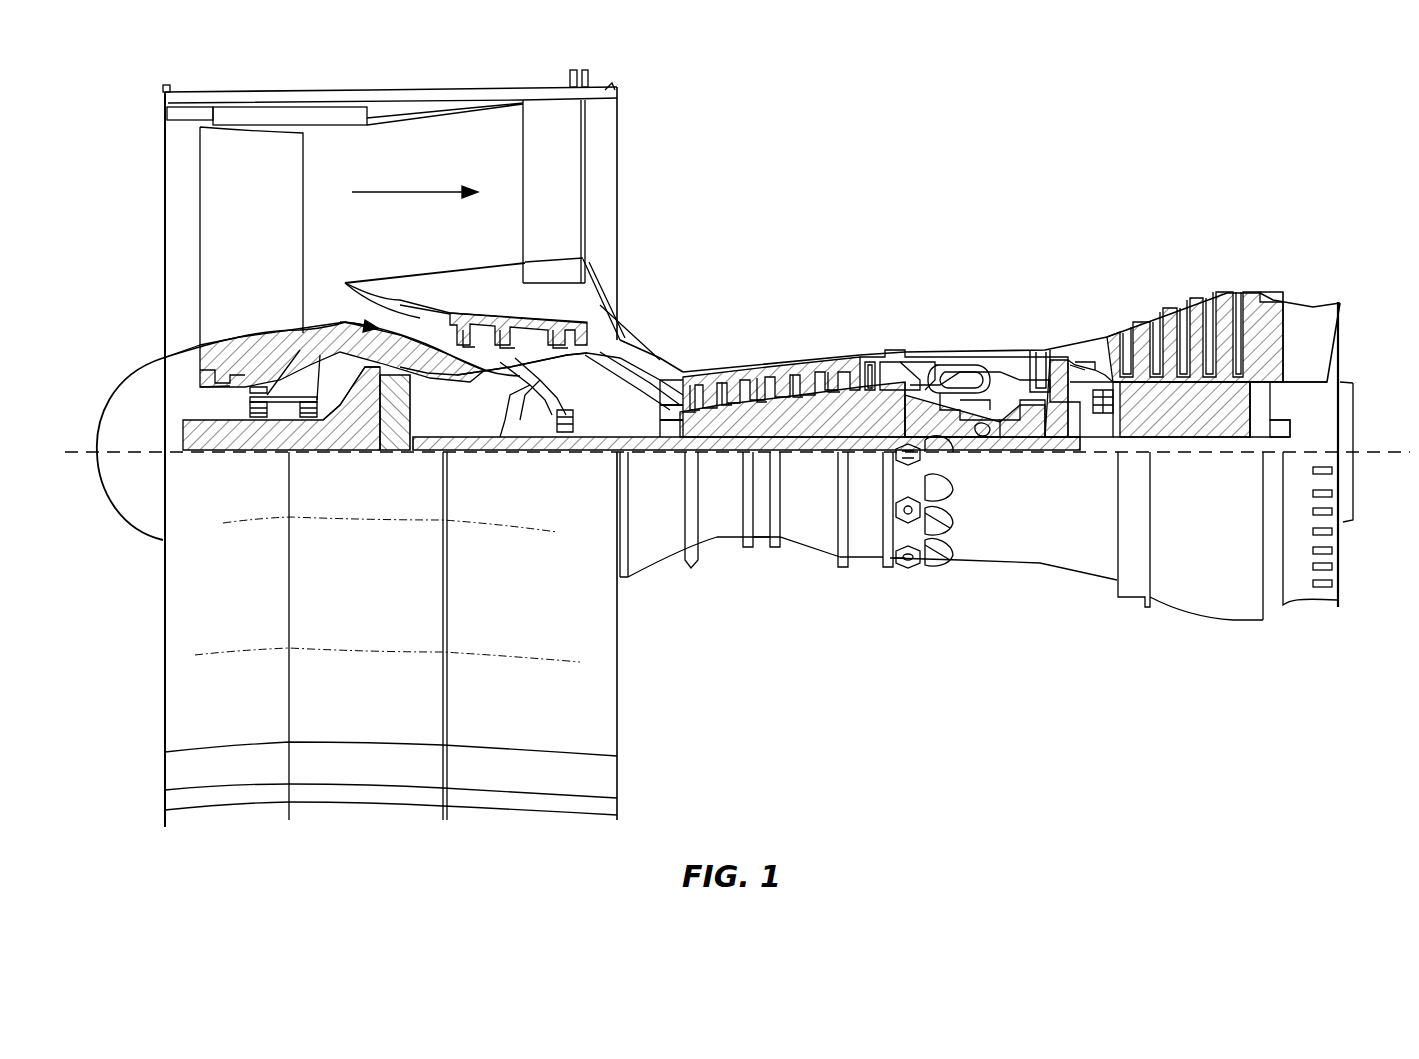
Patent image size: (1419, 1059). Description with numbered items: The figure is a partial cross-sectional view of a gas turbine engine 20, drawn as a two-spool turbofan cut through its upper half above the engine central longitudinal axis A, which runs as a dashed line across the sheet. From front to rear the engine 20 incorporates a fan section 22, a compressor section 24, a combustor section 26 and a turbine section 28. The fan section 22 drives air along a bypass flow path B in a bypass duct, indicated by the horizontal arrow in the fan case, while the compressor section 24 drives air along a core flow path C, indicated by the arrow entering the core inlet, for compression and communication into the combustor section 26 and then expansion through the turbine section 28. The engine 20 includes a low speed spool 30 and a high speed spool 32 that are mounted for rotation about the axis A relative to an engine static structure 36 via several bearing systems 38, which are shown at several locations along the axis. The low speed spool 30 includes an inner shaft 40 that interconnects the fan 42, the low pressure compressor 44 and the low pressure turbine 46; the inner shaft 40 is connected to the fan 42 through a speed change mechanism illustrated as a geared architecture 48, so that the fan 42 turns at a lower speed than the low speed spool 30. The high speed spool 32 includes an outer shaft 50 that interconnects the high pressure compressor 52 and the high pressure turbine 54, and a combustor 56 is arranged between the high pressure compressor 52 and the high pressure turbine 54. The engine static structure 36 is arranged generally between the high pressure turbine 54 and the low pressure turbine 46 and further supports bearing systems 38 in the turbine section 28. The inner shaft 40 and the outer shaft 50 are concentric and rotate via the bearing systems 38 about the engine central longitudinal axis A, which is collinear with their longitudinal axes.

The gas turbine engine 20 is at (725, 431).
The fan section 22 is at (265, 92).
The compressor section 24 is at (785, 265).
The combustor section 26 is at (975, 248).
The turbine section 28 is at (1120, 235).
The low speed spool 30 is at (828, 455).
The high speed spool 32 is at (873, 410).
The engine static structure 36 is at (868, 570).
The bearing systems 38 is at (260, 425).
The inner shaft 40 is at (637, 452).
The fan 42 is at (262, 236).
The low pressure compressor 44 is at (535, 330).
The low pressure turbine 46 is at (1198, 322).
The geared architecture 48 is at (397, 430).
The outer shaft 50 is at (988, 427).
The high pressure compressor 52 is at (778, 415).
The high pressure turbine 54 is at (1038, 350).
The combustor 56 is at (960, 370).
The engine central longitudinal axis A is at (1372, 452).
The bypass flow path B is at (415, 190).
The core flow path C is at (293, 318).